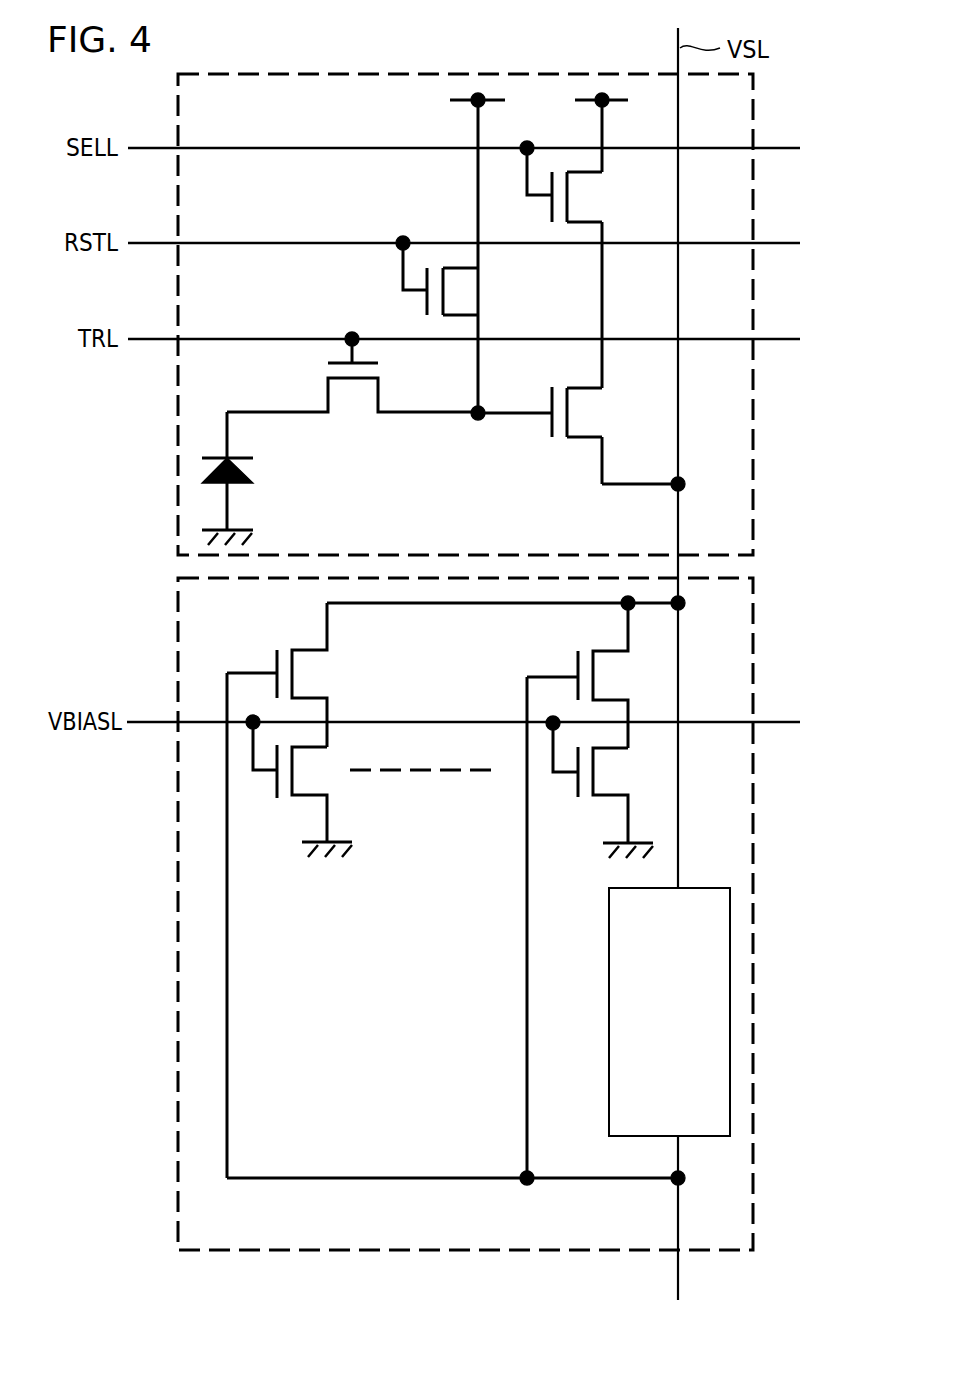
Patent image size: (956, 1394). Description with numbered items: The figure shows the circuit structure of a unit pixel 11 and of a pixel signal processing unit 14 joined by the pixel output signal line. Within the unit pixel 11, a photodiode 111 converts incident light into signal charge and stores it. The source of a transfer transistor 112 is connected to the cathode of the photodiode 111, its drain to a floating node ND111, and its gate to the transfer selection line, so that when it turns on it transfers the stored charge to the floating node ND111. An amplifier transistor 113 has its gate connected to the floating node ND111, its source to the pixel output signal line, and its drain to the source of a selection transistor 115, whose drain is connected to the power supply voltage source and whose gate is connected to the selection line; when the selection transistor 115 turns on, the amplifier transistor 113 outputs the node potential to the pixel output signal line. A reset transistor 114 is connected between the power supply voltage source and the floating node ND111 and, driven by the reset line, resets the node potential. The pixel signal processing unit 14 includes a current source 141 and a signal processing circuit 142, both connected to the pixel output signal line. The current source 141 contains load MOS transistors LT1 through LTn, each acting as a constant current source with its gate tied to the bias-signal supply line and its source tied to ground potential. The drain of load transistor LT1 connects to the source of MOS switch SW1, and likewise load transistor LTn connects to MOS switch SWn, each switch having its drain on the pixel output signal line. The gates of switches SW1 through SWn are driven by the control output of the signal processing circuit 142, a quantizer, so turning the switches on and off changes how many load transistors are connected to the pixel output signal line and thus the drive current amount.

The unit pixel 11 is at (353, 72).
The pixel signal processing unit 14 is at (753, 843).
The photodiode 111 is at (250, 470).
The transfer transistor 112 is at (350, 395).
The amplifier transistor 113 is at (585, 413).
The reset transistor 114 is at (465, 290).
The selection transistor 115 is at (585, 197).
The current source 141 is at (202, 836).
The signal processing circuit 142 is at (730, 998).
The floating node ND111 is at (482, 422).
The MOS switch SW1 is at (310, 673).
The MOS switch SWn is at (593, 648).
The load MOS transistor LT1 is at (318, 775).
The load MOS transistor LTn is at (575, 790).